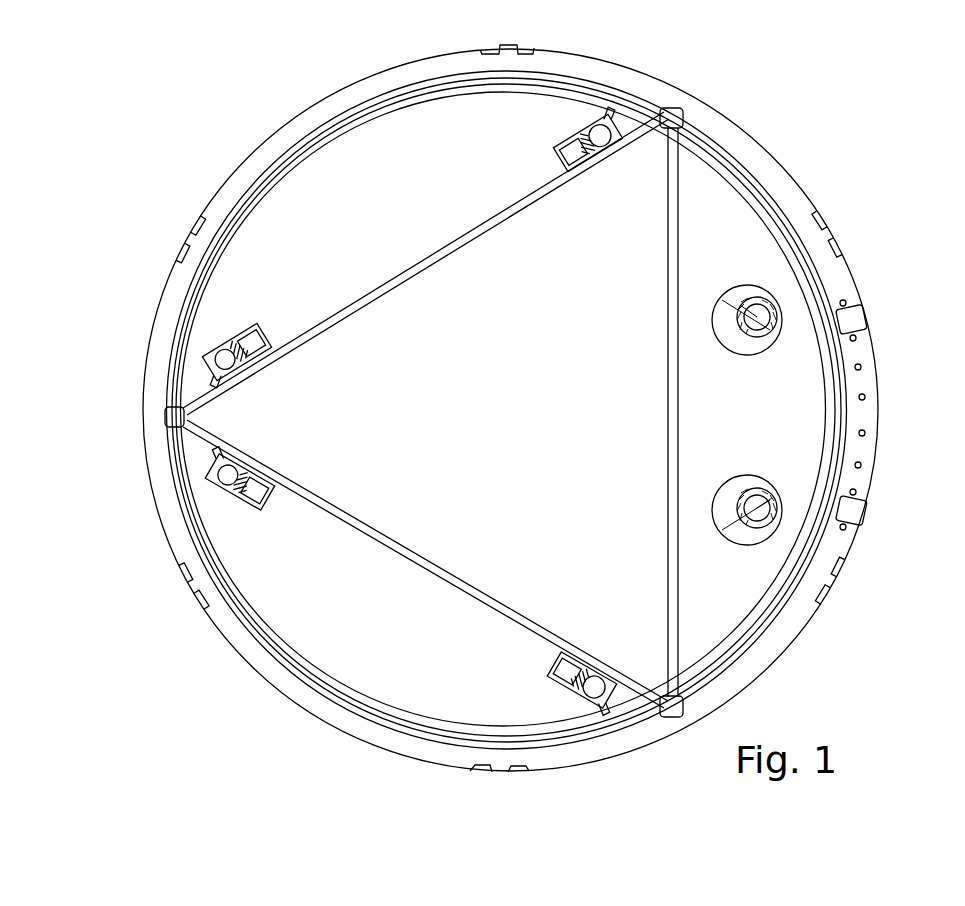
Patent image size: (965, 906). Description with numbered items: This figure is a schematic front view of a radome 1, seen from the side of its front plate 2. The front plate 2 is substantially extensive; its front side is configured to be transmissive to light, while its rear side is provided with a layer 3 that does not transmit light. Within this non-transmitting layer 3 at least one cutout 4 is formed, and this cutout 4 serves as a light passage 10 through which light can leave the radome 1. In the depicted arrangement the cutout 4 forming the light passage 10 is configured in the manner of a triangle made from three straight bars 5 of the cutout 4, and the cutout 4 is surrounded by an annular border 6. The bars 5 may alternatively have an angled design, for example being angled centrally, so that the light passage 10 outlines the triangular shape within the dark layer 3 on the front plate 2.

The radome 1 is at (818, 143).
The front plate 2 is at (595, 80).
The layer that does not transmit light 3 is at (767, 187).
The cutout 4 is at (410, 266).
The straight bars 5 is at (363, 297).
The annular border 6 is at (372, 110).
The light passage 10 is at (215, 272).